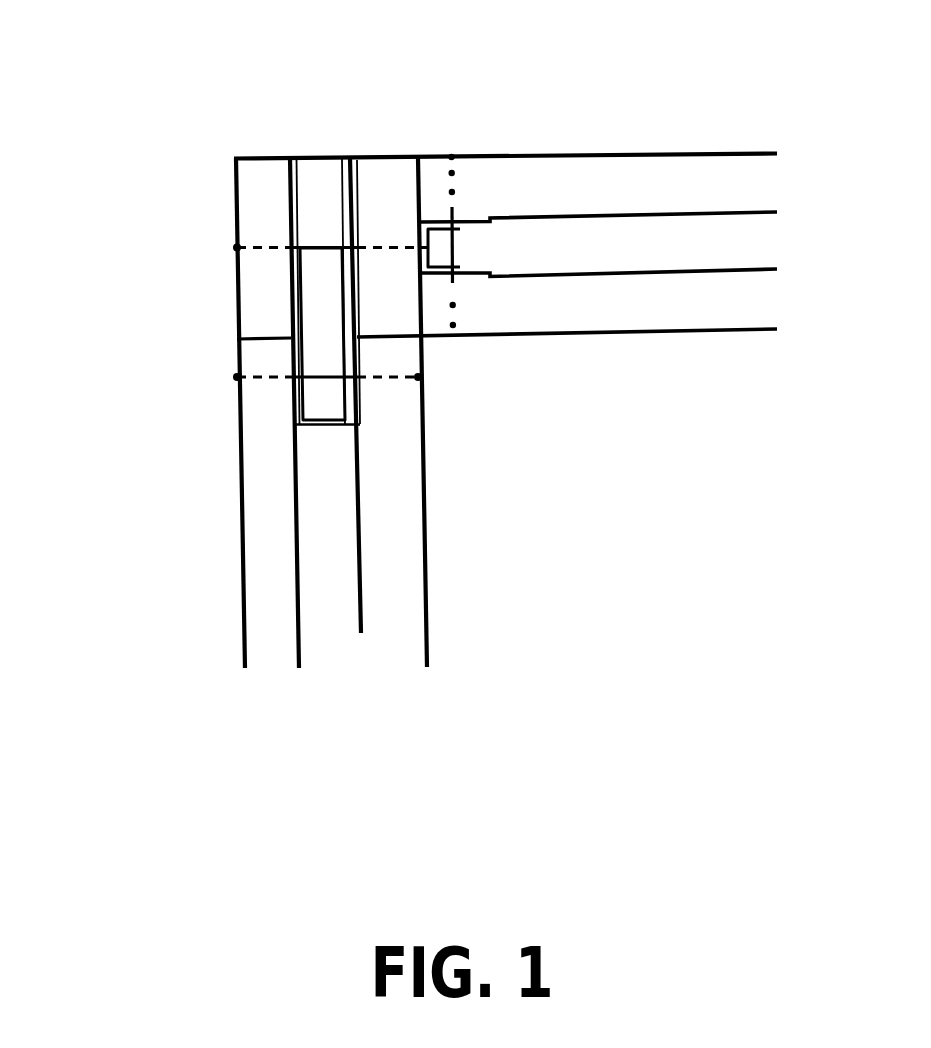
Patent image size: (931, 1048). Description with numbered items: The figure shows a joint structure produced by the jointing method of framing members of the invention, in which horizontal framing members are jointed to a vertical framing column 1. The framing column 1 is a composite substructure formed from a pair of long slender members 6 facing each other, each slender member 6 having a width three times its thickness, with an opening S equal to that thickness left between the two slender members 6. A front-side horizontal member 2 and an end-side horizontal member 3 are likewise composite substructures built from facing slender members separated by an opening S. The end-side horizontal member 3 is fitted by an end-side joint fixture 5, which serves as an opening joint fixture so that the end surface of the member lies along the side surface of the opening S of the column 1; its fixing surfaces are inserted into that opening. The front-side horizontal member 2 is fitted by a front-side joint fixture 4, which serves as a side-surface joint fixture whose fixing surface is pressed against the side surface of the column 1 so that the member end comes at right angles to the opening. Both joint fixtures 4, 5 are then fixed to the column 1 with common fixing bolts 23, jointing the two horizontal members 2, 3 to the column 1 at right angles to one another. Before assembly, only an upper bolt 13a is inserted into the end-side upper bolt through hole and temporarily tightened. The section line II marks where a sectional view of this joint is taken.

The framing column 1 is at (263, 158).
The front-side horizontal member 2 is at (634, 152).
The end-side horizontal member 3 is at (427, 528).
The front-side joint fixture 4 is at (474, 216).
The end-side joint fixture 5 is at (298, 305).
The slender member 6 is at (267, 200).
The fixing bolt 23 is at (260, 250).
The upper bolt 13a is at (386, 380).
The opening S is at (316, 188).
The section line II- II is at (738, 175).